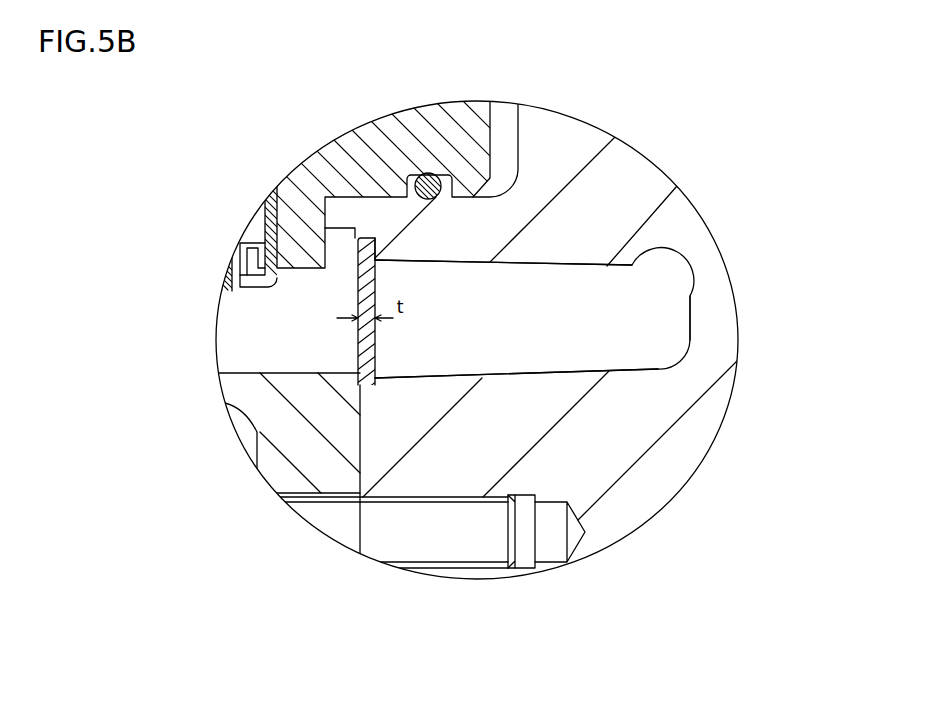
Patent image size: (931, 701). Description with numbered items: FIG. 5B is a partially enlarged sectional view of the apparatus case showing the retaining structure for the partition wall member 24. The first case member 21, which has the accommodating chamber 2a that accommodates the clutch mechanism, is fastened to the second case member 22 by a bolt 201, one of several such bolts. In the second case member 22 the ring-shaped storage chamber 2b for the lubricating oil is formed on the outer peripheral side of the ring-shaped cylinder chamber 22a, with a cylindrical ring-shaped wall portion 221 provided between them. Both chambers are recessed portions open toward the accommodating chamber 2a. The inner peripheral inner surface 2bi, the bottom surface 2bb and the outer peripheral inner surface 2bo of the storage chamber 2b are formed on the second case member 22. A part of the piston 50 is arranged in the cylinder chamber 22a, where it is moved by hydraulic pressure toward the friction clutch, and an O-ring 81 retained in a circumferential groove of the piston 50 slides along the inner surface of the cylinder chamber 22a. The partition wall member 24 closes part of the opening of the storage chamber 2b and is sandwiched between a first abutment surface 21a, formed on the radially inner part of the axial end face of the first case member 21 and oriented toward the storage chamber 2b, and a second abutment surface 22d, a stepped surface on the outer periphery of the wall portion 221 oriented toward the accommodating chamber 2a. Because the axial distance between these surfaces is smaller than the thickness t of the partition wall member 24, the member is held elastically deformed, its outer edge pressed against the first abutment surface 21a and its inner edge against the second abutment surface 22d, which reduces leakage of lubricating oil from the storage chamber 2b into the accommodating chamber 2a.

The piston 50 is at (440, 120).
The O-ring 81 is at (436, 197).
The cylinder chamber 22a is at (503, 128).
The ring-shaped wall portion 221 is at (340, 215).
The accommodating chamber 2a is at (237, 320).
The second abutment surface 22d is at (376, 256).
The partition wall member 24 is at (358, 355).
The first abutment surface 21a is at (361, 378).
The first case member 21 is at (250, 407).
The storage chamber 2b is at (668, 297).
The inner peripheral inner surface 2bi is at (568, 267).
The outer peripheral inner surface 2bo is at (540, 373).
The bottom surface 2bb is at (688, 328).
The second case member 22 is at (683, 440).
The bolt 201 is at (425, 557).